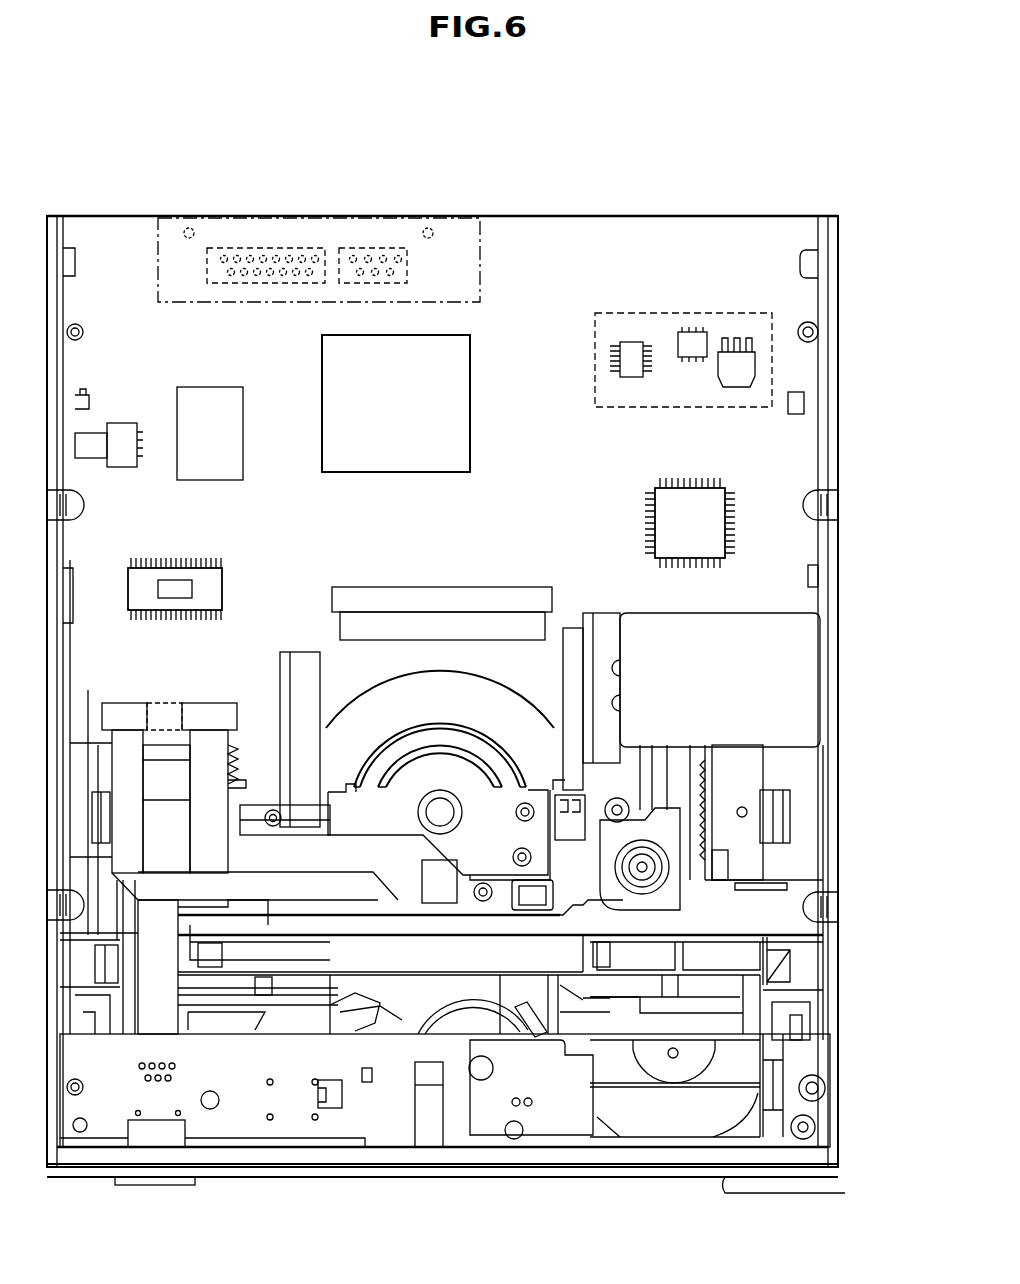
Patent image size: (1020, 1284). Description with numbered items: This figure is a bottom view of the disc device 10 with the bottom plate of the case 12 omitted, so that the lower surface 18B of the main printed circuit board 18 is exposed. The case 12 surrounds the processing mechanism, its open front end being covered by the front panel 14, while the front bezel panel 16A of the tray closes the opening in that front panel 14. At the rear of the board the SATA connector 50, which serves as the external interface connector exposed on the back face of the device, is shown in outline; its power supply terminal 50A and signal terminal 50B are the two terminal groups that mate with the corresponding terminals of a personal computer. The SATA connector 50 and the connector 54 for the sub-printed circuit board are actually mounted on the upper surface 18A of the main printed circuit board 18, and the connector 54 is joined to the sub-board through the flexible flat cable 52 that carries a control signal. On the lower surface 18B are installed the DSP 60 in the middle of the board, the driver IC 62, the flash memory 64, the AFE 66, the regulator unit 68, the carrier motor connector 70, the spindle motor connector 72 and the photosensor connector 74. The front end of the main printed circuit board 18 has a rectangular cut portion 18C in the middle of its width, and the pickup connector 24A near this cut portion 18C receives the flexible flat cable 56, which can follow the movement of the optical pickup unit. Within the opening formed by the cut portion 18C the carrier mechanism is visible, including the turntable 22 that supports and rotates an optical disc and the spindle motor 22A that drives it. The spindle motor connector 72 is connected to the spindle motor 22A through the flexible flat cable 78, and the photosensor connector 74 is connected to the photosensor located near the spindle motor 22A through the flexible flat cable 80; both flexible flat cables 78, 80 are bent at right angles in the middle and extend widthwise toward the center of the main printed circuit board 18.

The disc device 10 is at (816, 178).
The case 12 is at (846, 578).
The front panel 14 is at (574, 1170).
The front bezel panel 16A is at (323, 1180).
The main printed circuit board 18 is at (716, 214).
The upper surface 18A is at (672, 222).
The lower surface 18B is at (738, 232).
The cut portion 18C is at (622, 662).
The turntable 22 is at (433, 683).
The spindle motor 22A is at (438, 790).
The pickup connector 24A is at (512, 592).
The SATA connector 50 is at (310, 216).
The power supply terminal 50A is at (222, 248).
The signal terminal 50B is at (378, 248).
The flexible flat cable 52 is at (162, 1000).
The connector 54 is at (162, 710).
The flexible flat cable 56 is at (516, 630).
The DSP 60 is at (445, 472).
The driver IC 62 is at (208, 580).
The flash memory 64 is at (230, 402).
The AFE 66 is at (690, 560).
The regulator unit 68 is at (622, 407).
The carrier motor connector 70 is at (122, 430).
The spindle motor connector 72 is at (214, 712).
The photosensor connector 74 is at (124, 712).
The flexible flat cable 78 is at (232, 742).
The flexible flat cable 80 is at (110, 735).